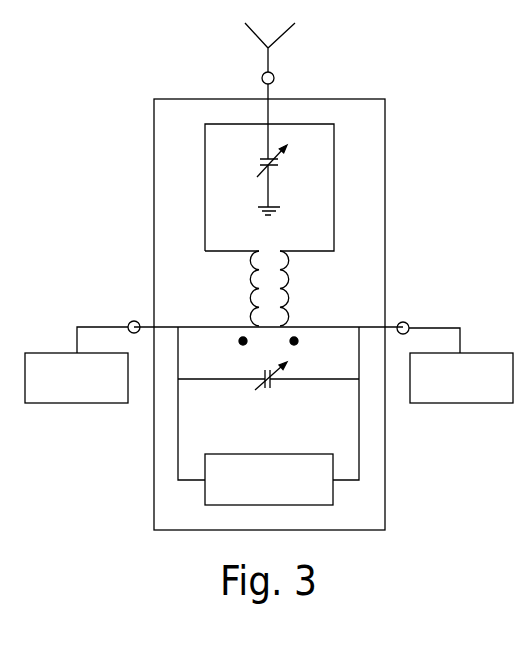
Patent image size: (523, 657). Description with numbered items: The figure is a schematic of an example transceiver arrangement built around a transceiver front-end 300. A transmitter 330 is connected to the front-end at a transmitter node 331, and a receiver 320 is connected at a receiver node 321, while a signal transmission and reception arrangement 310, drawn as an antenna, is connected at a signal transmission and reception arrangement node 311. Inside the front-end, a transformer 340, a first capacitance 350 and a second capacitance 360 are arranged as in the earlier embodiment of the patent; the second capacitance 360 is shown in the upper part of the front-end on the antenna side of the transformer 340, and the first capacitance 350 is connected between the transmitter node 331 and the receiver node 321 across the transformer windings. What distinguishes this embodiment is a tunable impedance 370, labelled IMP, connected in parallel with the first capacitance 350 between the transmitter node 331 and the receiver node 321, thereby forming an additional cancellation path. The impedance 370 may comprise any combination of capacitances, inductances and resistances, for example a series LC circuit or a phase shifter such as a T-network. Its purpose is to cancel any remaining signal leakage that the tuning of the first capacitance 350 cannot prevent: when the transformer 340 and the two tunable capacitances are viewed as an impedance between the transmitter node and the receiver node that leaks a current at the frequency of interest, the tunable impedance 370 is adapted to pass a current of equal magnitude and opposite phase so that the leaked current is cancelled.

The transceiver front-end 300 is at (386, 187).
The signal transmission and reception arrangement 310 is at (253, 35).
The signal transmission and reception arrangement node 311 is at (275, 80).
The receiver 320 is at (461, 365).
The receiver node 321 is at (409, 324).
The transmitter 330 is at (76, 365).
The transmitter node 331 is at (129, 324).
The transformer 340 is at (283, 290).
The first capacitance 350 is at (257, 379).
The second capacitance 360 is at (272, 167).
The tunable impedance 370 is at (269, 479).